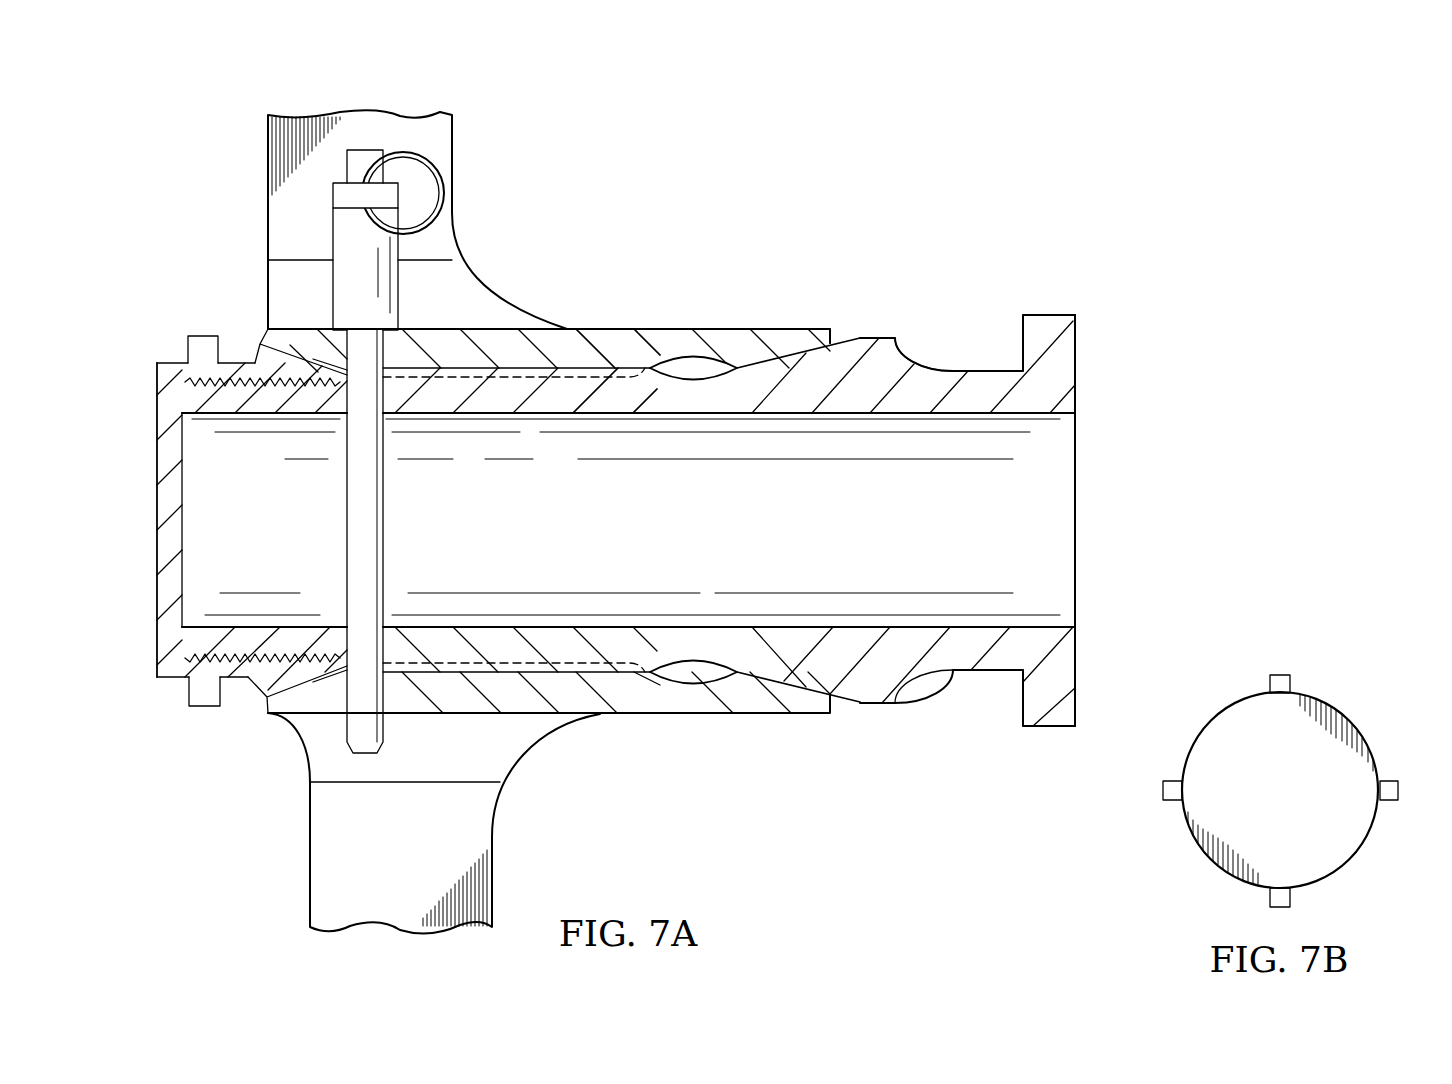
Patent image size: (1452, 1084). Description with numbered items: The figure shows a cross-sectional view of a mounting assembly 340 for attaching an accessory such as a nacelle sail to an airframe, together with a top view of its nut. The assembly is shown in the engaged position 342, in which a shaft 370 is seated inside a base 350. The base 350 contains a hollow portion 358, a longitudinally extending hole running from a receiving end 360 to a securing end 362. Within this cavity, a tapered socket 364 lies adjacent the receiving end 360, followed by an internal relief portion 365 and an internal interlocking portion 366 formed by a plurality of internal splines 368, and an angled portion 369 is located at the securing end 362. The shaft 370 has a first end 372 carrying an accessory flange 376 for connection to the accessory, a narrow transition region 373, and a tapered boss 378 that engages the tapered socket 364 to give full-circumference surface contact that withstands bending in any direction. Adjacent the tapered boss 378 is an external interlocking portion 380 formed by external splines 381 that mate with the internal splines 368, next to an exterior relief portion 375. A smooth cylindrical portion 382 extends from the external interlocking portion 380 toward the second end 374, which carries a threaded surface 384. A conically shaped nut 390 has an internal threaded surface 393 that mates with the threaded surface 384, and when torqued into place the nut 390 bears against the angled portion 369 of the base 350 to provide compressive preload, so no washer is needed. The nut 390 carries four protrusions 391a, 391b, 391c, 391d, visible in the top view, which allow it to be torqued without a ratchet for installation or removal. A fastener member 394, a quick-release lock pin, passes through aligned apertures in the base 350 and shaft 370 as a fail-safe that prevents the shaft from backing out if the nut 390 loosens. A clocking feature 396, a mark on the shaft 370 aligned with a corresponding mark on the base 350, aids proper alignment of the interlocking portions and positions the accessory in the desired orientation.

In FIG. 7A, the mounting assembly 340 is at (963, 122).
In FIG. 7A, the engaged position 342 is at (838, 170).
In FIG. 7A, the base 350 is at (267, 212).
In FIG. 7A, the hollow portion 358 is at (760, 355).
In FIG. 7A, the receiving end 360 is at (830, 340).
In FIG. 7A, the securing end 362 is at (266, 338).
In FIG. 7A, the tapered socket 364 is at (808, 338).
In FIG. 7A, the internal relief portion 365 is at (695, 358).
In FIG. 7A, the internal interlocking portion 366 is at (635, 365).
In FIG. 7A, the internal splines 368 is at (577, 373).
In FIG. 7A, the angled portion 369 is at (293, 353).
In FIG. 7A, the shaft 370 is at (1079, 572).
In FIG. 7A, the first end 372 is at (1078, 360).
In FIG. 7A, the narrow transition region 373 is at (958, 368).
In FIG. 7A, the second end 374 is at (178, 508).
In FIG. 7A, the exterior relief portion 375 is at (700, 388).
In FIG. 7A, the accessory flange 376 is at (1047, 312).
In FIG. 7A, the tapered boss 378 is at (820, 352).
In FIG. 7A, the external interlocking portion 380 is at (440, 380).
In FIG. 7A, the external splines 381 is at (520, 373).
In FIG. 7A, the cylindrical portion 382 is at (258, 385).
In FIG. 7A, the threaded surface 384 is at (183, 396).
In FIG. 7A, the conically shaped nut 390 is at (165, 568).
In FIG. 7B, the conically shaped nut 390 is at (1349, 859).
In FIG. 7A, the protrusion 391a is at (186, 350).
In FIG. 7B, the protrusion 391a is at (1280, 675).
In FIG. 7B, the protrusion 391b is at (1390, 781).
In FIG. 7A, the protrusion 391c is at (205, 708).
In FIG. 7B, the protrusion 391c is at (1270, 898).
In FIG. 7B, the protrusion 391d is at (1163, 792).
In FIG. 7A, the internal threaded surface 393 is at (232, 395).
In FIG. 7A, the fastener member 394 is at (367, 150).
In FIG. 7A, the clocking feature 396 is at (370, 357).